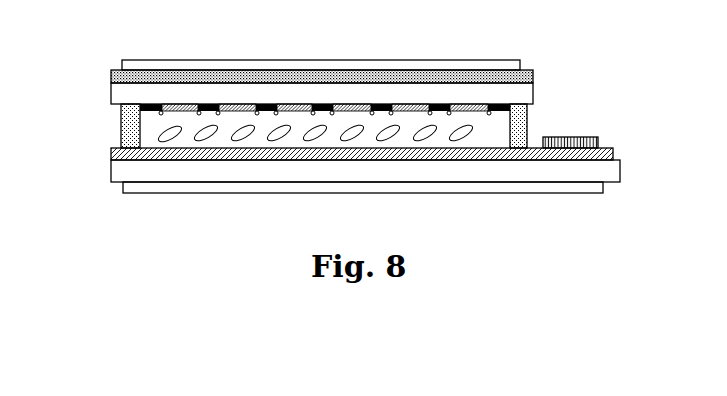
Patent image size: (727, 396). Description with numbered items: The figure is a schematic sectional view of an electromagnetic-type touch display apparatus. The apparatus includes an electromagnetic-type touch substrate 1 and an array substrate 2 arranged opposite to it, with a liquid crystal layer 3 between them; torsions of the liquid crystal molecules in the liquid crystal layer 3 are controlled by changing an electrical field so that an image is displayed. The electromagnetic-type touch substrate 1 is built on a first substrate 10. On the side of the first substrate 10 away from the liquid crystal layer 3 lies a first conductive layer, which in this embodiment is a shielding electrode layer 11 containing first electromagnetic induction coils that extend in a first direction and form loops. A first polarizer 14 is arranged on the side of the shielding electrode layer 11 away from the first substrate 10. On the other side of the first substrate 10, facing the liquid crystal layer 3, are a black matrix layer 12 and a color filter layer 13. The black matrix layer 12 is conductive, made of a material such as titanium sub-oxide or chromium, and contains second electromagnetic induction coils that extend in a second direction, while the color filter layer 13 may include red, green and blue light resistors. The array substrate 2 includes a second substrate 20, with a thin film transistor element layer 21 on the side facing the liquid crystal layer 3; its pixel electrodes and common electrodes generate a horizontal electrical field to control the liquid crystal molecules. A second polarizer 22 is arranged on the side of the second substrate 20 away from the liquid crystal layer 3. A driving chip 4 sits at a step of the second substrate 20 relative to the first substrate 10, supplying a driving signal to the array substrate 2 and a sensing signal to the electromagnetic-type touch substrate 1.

The electromagnetic-type touch substrate 1 is at (340, 65).
The array substrate 2 is at (348, 182).
The liquid crystal layer 3 is at (463, 131).
The driving chip 4 is at (599, 140).
The first substrate 10 is at (517, 92).
The shielding electrode layer 11 is at (513, 78).
The black matrix layer 12 is at (263, 105).
The color filter layer 13 is at (352, 103).
The first polarizer 14 is at (491, 67).
The second substrate 20 is at (133, 173).
The thin film transistor element layer 21 is at (110, 151).
The second polarizer 22 is at (140, 187).